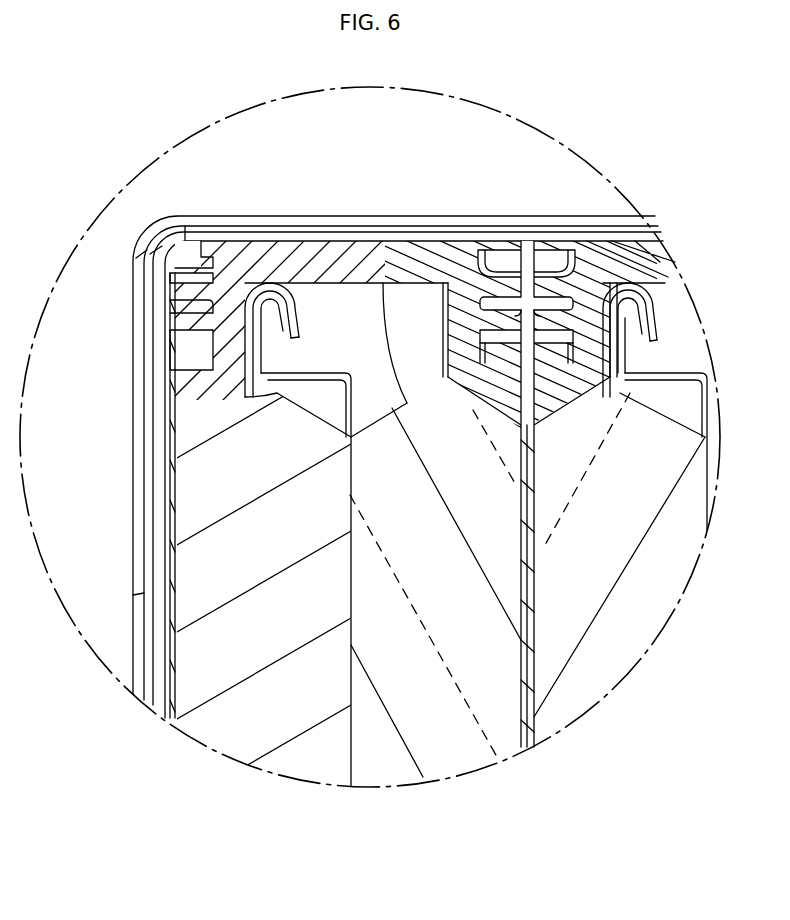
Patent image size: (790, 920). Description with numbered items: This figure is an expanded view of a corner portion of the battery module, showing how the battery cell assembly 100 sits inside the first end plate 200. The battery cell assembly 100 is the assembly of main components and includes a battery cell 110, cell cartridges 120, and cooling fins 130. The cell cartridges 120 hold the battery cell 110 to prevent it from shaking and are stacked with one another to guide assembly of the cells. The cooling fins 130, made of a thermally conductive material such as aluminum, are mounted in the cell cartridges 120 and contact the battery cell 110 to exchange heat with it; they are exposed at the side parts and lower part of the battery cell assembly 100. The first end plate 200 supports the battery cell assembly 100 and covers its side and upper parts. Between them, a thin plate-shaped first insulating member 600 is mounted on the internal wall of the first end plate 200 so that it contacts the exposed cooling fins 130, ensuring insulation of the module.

The battery cell assembly 100 is at (317, 797).
The battery cell 110 is at (383, 283).
The cell cartridge 120 is at (272, 250).
The cooling fin 130 is at (172, 718).
The first end plate 200 is at (160, 222).
The first insulating member 600 is at (163, 700).